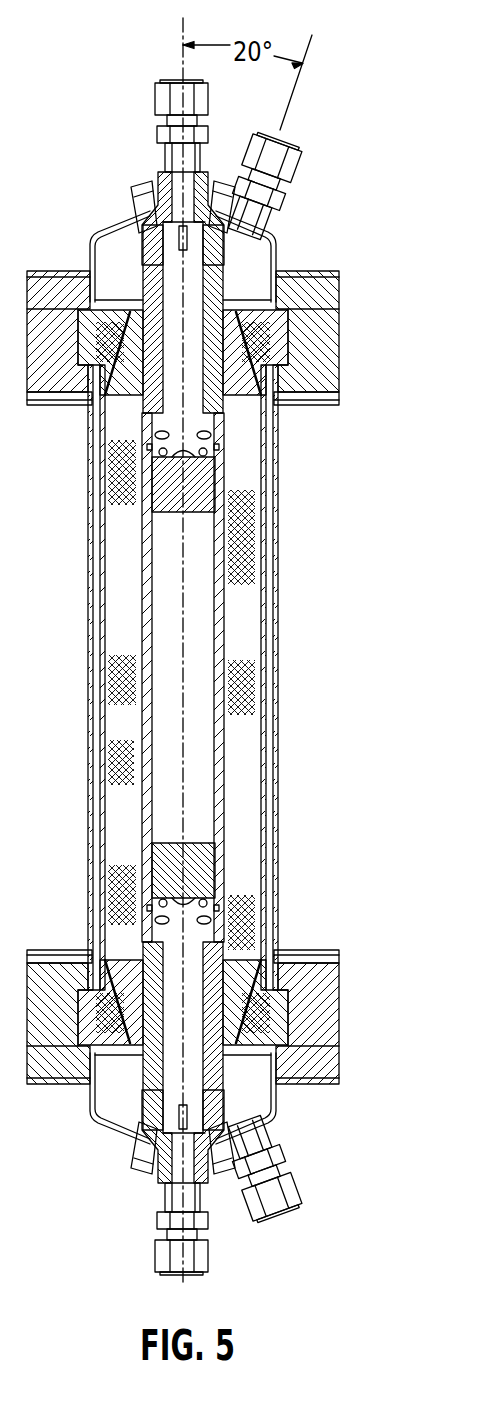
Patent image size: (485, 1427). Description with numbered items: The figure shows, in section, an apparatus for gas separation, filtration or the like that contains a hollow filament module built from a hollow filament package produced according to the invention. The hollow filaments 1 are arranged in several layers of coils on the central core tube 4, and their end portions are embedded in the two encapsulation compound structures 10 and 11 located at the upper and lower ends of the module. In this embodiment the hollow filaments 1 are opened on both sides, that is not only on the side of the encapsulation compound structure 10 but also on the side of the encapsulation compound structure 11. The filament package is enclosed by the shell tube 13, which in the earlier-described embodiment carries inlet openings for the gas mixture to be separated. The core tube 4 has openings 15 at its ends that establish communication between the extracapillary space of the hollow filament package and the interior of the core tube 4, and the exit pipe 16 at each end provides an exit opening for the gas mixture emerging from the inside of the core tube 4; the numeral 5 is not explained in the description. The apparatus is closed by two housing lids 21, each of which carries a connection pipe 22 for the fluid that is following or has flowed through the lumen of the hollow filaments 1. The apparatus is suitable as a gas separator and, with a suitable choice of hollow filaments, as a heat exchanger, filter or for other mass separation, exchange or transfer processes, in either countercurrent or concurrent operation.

The hollow filaments 1 is at (248, 712).
The core tube 4 is at (226, 568).
The axial bore 5 is at (183, 785).
The upper encapsulation compound structure 10 is at (290, 340).
The lower encapsulation compound structure 11 is at (268, 1003).
The shell tube 13 is at (277, 650).
The openings 15 is at (220, 452).
The exit pipe 16 is at (172, 157).
The housing lids 21 is at (270, 232).
The connection pipe 22 is at (291, 183).